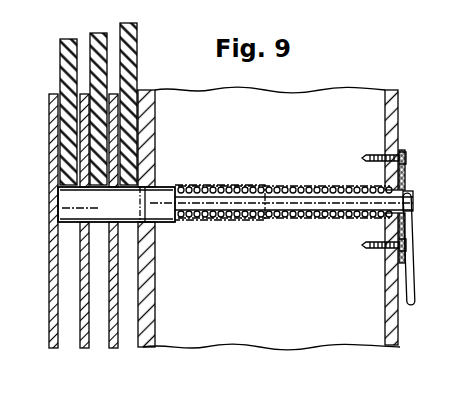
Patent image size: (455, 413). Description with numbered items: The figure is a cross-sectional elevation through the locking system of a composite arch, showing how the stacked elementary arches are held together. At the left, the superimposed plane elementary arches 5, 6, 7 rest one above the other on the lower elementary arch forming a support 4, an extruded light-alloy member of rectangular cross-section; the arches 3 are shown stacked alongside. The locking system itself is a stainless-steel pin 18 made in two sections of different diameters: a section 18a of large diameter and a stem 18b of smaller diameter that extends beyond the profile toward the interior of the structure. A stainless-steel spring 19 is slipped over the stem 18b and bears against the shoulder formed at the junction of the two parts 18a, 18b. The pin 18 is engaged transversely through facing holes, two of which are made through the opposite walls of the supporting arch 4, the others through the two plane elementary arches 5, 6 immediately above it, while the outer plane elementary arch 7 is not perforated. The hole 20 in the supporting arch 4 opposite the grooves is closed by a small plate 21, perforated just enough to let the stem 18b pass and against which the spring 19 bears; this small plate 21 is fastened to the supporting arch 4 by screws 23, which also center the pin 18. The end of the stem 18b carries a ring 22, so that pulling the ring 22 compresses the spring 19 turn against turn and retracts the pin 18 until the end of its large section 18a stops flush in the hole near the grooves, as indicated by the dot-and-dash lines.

The plates 3 is at (126, 22).
The lower elementary arch forming a support 4 is at (246, 348).
The plane elementary arch 5 is at (116, 348).
The plane elementary arch 6 is at (86, 348).
The plane elementary arch 7 is at (54, 348).
The pin 18 is at (163, 186).
The section of large diameter 18a is at (66, 206).
The stem of smaller diameter 18b is at (276, 184).
The spring 19 is at (310, 186).
The hole 20 is at (143, 90).
The small plate 21 is at (405, 170).
The ring 22 is at (414, 262).
The screws 23 is at (406, 157).